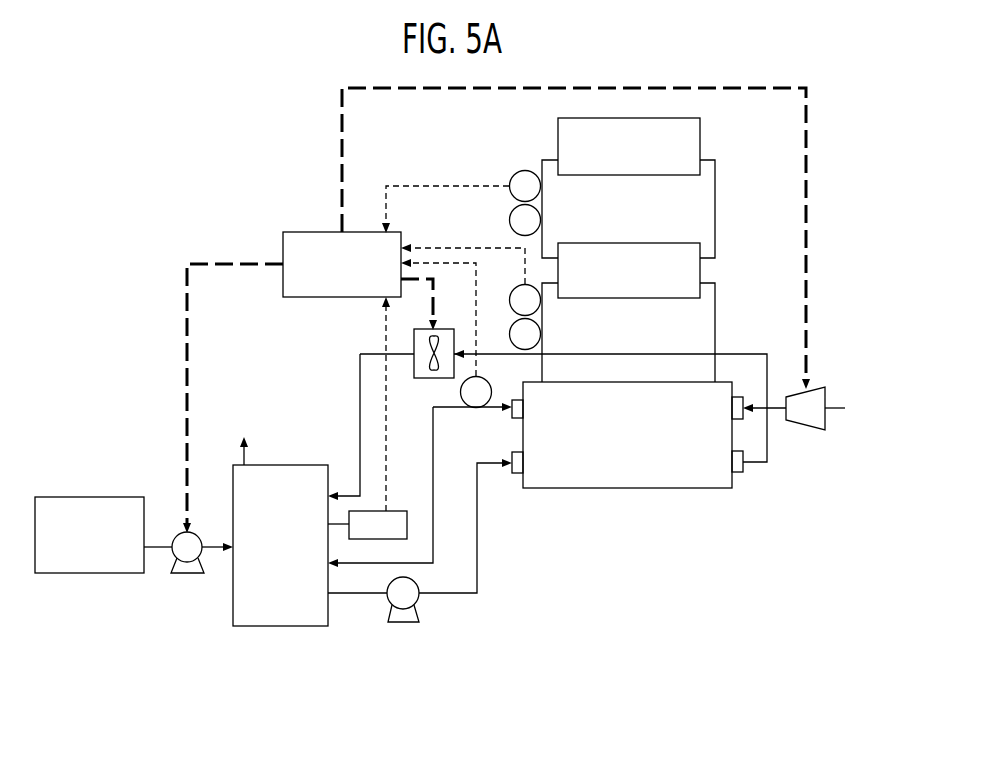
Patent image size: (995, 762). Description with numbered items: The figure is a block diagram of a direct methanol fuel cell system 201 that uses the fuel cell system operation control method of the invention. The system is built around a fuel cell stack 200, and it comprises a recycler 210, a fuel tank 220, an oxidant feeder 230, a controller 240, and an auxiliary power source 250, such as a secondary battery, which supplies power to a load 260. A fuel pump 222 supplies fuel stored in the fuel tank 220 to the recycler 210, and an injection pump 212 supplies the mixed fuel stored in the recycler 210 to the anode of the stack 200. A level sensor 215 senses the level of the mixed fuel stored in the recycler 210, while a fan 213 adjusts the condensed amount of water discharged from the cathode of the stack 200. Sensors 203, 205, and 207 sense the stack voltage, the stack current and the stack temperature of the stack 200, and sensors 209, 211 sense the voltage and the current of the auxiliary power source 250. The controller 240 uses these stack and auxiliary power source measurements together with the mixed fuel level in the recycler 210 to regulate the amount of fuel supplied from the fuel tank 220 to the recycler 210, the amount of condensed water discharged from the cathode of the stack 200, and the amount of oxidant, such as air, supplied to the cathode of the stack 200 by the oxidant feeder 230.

The fuel cell stack 200 is at (627, 488).
The direct methanol fuel cell system 201 is at (645, 634).
The sensor 203 is at (540, 300).
The sensor 205 is at (540, 334).
The sensor 207 is at (468, 407).
The sensor 209 is at (514, 174).
The sensor 211 is at (509, 220).
The recycler 210 is at (275, 626).
The injection pump 212 is at (404, 622).
The fan 213 is at (425, 378).
The level sensor 215 is at (400, 511).
The fuel tank 220 is at (78, 573).
The fuel pump 222 is at (188, 573).
The oxidant feeder 230 is at (806, 430).
The controller 240 is at (305, 232).
The auxiliary power source 250 is at (628, 175).
The load 260 is at (670, 298).